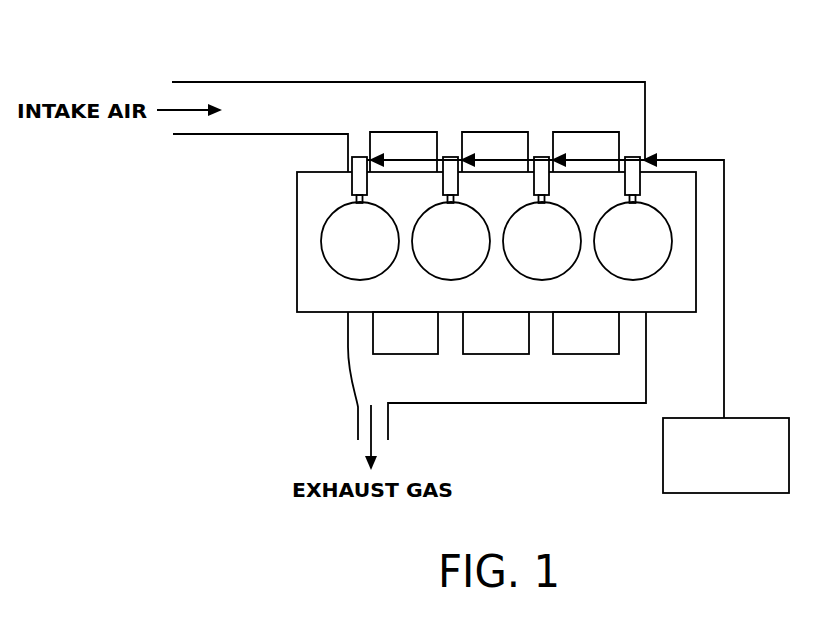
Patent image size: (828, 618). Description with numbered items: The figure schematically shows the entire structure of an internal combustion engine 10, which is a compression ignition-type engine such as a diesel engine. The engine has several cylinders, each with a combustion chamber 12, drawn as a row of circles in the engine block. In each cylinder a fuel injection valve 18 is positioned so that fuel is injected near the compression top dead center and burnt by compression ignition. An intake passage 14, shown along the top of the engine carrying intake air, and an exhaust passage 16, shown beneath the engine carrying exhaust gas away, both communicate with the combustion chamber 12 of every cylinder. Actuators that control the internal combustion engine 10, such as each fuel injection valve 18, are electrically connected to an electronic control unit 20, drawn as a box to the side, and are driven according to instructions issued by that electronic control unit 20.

The internal combustion engine 10 is at (729, 124).
The combustion chamber 12 is at (613, 277).
The intake passage 14 is at (602, 107).
The exhaust passage 16 is at (566, 388).
The fuel injection valve 18 is at (352, 181).
The electronic control unit 20 is at (757, 418).